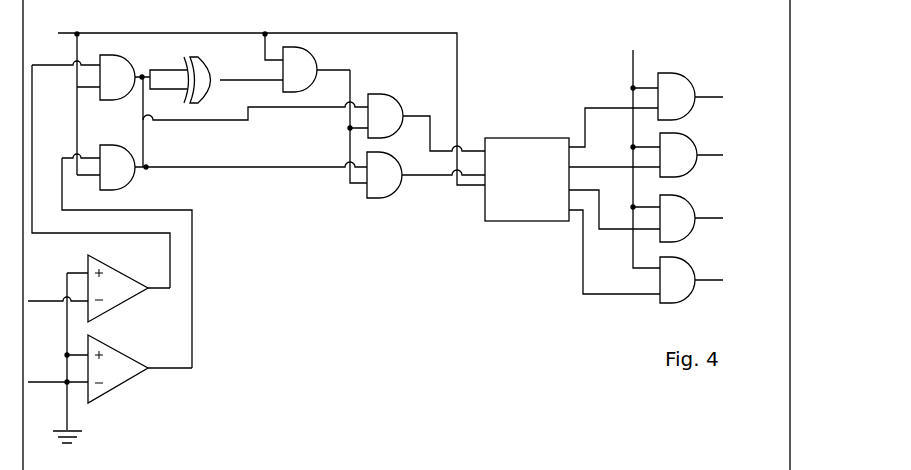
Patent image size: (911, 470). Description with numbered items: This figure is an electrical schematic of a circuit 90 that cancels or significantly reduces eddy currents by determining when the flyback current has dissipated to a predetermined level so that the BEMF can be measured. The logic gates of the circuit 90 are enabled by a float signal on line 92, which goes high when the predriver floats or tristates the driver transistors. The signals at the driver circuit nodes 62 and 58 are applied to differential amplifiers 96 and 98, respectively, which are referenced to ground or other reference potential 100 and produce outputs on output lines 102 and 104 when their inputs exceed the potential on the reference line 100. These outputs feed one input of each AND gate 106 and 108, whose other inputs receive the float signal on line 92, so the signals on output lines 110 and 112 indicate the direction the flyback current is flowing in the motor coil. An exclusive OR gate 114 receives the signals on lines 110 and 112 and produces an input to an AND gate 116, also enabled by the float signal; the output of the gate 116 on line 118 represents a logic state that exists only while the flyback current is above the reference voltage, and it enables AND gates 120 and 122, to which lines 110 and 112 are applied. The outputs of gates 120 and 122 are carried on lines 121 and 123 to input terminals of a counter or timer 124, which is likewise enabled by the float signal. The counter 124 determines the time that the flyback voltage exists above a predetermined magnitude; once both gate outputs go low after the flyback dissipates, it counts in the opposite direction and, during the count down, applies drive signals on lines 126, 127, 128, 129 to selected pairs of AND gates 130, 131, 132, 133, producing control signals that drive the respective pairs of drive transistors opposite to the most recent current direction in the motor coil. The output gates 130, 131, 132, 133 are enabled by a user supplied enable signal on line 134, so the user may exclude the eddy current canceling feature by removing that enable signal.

The circuit 90 is at (549, 53).
The float signal line 92 is at (190, 33).
The differential amplifier 96 is at (118, 387).
The differential amplifier 98 is at (123, 302).
The reference potential 100 is at (68, 420).
The output line 102 is at (192, 368).
The output line 104 is at (29, 237).
The AND gate 106 is at (133, 185).
The AND gate 108 is at (95, 103).
The output line 110 is at (245, 172).
The output line 112 is at (247, 126).
The exclusive OR gate 114 is at (200, 58).
The AND gate 116 is at (318, 50).
The output line 118 is at (352, 72).
The AND gate 120 is at (388, 194).
The output line 121 is at (412, 174).
The AND gate 122 is at (398, 92).
The output line 123 is at (433, 143).
The counter or timer 124 is at (543, 118).
The drive signal line 126 is at (614, 106).
The drive signal line 127 is at (611, 165).
The drive signal line 128 is at (620, 198).
The drive signal line 129 is at (605, 264).
The output AND gate 130 is at (687, 85).
The output AND gate 131 is at (708, 140).
The output AND gate 132 is at (705, 203).
The output AND gate 133 is at (708, 264).
The enable line 134 is at (631, 68).
The driver circuit node 58 is at (32, 302).
The driver circuit node 62 is at (32, 386).